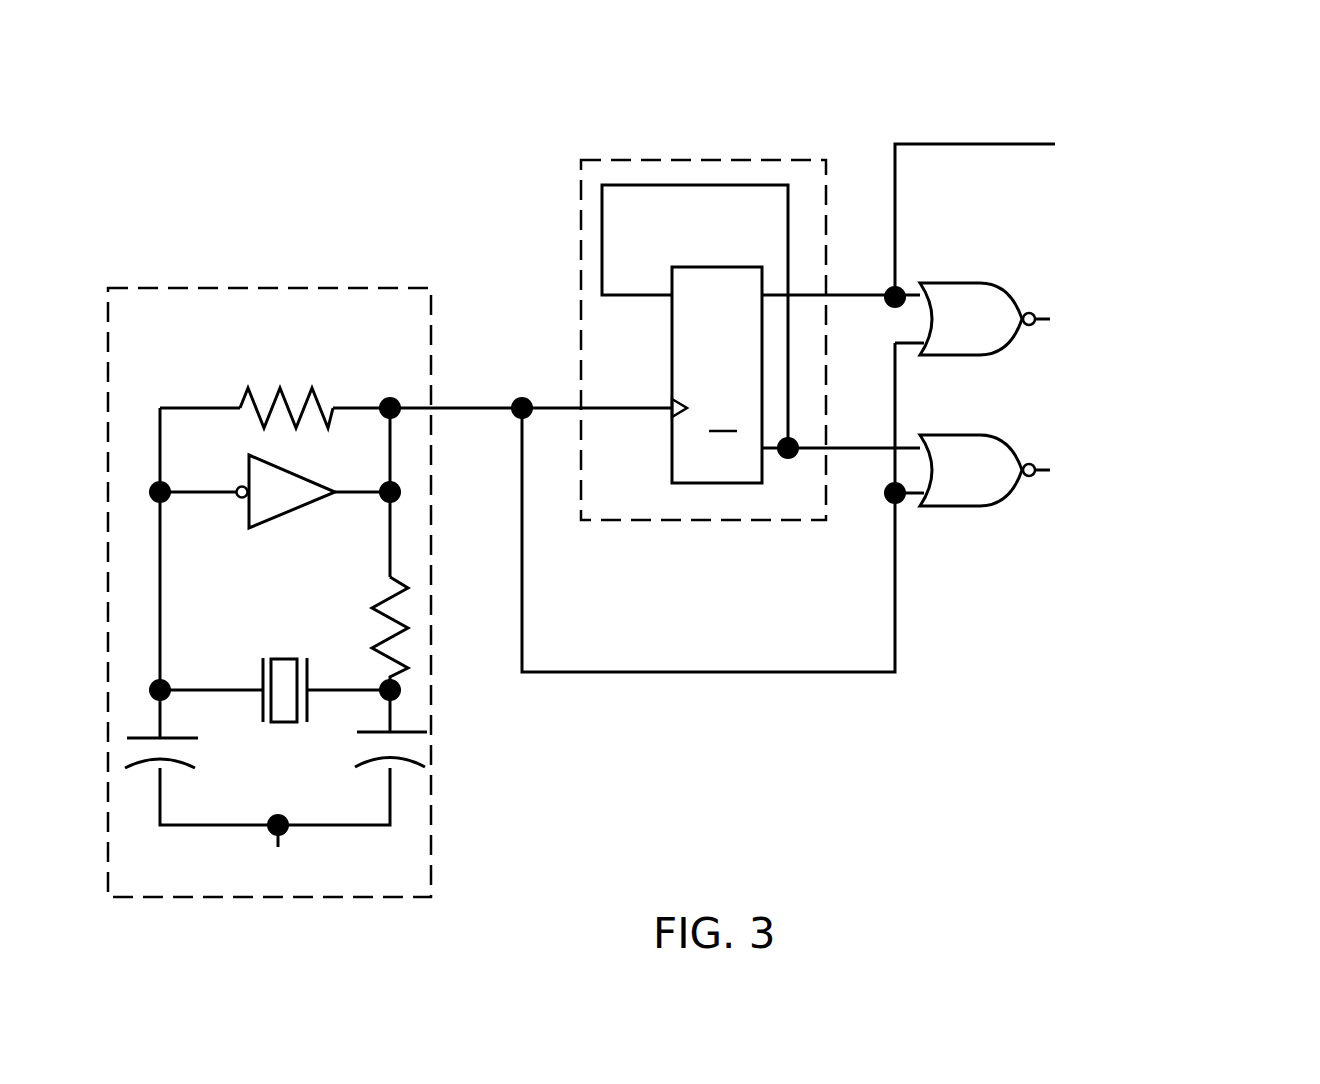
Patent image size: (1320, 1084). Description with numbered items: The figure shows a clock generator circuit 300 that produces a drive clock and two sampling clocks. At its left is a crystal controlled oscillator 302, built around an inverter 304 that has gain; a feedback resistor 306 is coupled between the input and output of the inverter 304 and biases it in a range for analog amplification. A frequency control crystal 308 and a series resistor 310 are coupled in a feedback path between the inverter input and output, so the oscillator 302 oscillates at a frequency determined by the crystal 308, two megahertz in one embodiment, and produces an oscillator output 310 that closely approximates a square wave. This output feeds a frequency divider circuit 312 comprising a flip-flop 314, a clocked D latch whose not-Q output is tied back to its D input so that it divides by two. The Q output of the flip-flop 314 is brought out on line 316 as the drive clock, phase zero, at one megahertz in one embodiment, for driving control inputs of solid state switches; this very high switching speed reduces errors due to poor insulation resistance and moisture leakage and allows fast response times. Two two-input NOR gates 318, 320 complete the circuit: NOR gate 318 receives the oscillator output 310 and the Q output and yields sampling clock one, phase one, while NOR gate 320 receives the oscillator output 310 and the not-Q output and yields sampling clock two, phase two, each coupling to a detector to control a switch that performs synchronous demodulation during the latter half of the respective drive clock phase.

The clock generator circuit 300 is at (850, 788).
The crystal controlled oscillator 302 is at (348, 288).
The inverter 304 is at (282, 516).
The feedback resistor 306 is at (282, 387).
The frequency control crystal 308 is at (299, 659).
The series resistor / oscillator output 310 is at (387, 597).
The frequency divider circuit 312 is at (611, 160).
The flip-flop 314 is at (717, 375).
The line 316 is at (973, 144).
The NOR gate 318 is at (947, 283).
The NOR gate 320 is at (940, 435).